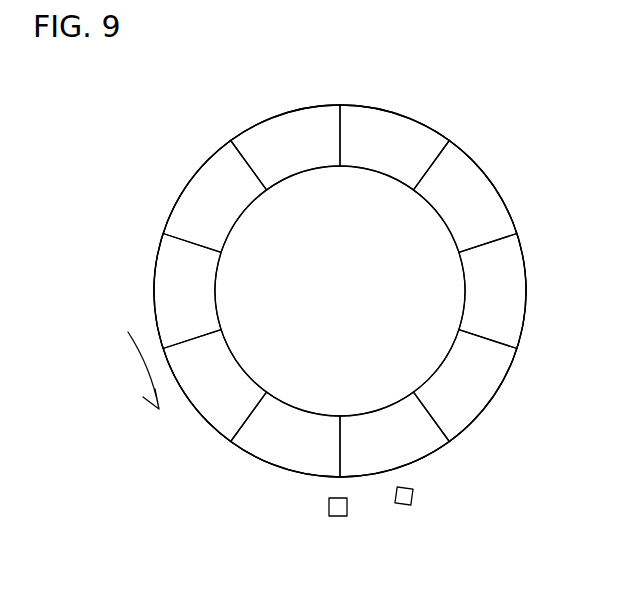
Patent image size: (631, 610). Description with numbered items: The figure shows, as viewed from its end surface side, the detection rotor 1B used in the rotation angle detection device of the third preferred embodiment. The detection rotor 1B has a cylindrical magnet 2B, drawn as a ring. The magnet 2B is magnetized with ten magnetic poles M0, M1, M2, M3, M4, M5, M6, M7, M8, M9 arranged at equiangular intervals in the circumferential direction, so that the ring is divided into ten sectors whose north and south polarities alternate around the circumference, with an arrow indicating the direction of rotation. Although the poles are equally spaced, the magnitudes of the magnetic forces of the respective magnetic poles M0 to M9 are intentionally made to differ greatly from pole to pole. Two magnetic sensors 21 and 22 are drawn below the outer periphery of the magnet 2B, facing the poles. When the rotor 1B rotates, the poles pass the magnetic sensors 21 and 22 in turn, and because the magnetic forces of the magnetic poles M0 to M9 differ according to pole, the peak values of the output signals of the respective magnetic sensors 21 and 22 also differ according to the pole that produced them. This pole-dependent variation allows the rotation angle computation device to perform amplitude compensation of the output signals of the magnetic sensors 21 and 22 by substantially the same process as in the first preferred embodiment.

The detection rotor 1B is at (236, 98).
The cylindrical magnet 2B is at (208, 158).
The magnetic pole M0 is at (375, 120).
The magnetic pole M1 is at (495, 217).
The magnetic pole M2 is at (505, 322).
The magnetic pole M3 is at (493, 370).
The magnetic pole M4 is at (420, 447).
The magnetic pole M5 is at (293, 462).
The magnetic pole M6 is at (222, 422).
The magnetic pole M7 is at (167, 270).
The magnetic pole M8 is at (179, 215).
The magnetic pole M9 is at (312, 121).
The magnetic sensor 21 is at (408, 506).
The magnetic sensor 22 is at (338, 517).